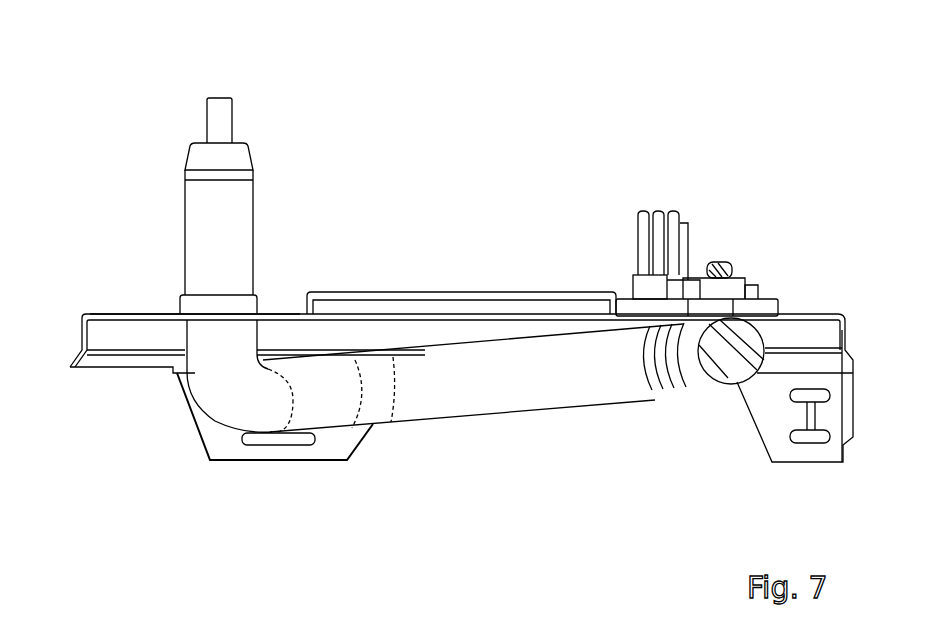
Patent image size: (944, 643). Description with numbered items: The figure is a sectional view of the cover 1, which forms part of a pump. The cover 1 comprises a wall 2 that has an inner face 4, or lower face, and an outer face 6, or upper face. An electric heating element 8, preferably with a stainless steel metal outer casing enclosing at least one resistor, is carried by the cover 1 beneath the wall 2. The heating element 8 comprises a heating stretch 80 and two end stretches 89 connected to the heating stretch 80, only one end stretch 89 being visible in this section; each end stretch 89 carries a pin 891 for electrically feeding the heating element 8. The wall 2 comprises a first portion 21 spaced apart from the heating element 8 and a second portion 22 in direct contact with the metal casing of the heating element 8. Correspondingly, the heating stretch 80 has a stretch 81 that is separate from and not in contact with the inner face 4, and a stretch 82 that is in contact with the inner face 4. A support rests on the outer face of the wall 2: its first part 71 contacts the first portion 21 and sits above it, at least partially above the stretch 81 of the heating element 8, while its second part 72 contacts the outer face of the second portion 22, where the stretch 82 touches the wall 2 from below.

The cover 1 is at (143, 150).
The wall 2 is at (93, 313).
The inner face 4 is at (127, 323).
The outer face 6 is at (142, 317).
The heating element 8 is at (428, 437).
The first portion 21 is at (620, 315).
The second portion 22 is at (733, 305).
The first part 71 is at (630, 310).
The second part 72 is at (763, 305).
The heating stretch 80 is at (468, 416).
The stretch spaced apart 81 is at (608, 387).
The stretch in contact 82 is at (733, 367).
The end stretch 89 is at (238, 213).
The pin 891 is at (217, 118).